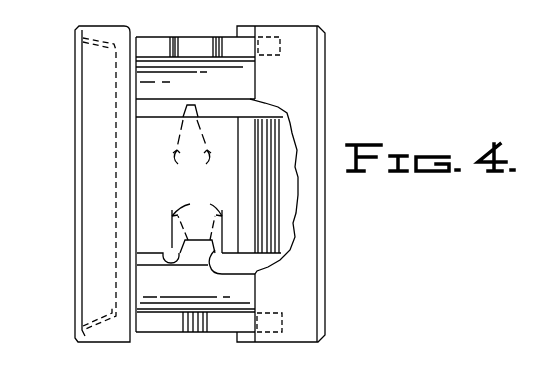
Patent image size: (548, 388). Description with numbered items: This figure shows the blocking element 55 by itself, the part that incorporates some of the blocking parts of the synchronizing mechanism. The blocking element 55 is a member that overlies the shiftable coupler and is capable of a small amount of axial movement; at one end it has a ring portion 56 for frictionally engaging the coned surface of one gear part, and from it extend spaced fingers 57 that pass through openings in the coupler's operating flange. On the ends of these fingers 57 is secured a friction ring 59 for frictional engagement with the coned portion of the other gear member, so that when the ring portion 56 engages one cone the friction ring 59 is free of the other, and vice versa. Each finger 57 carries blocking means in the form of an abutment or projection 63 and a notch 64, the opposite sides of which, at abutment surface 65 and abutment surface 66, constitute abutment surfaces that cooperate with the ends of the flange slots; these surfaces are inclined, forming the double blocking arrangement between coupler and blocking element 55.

The blocking element 55 is at (143, 47).
The ring portion 56 is at (106, 27).
The fingers 57 is at (209, 30).
The friction ring 59 is at (270, 78).
The projection 63 is at (196, 107).
The notch 64 is at (207, 240).
The abutment surface 65 is at (257, 273).
The abutment surface 66 is at (168, 251).